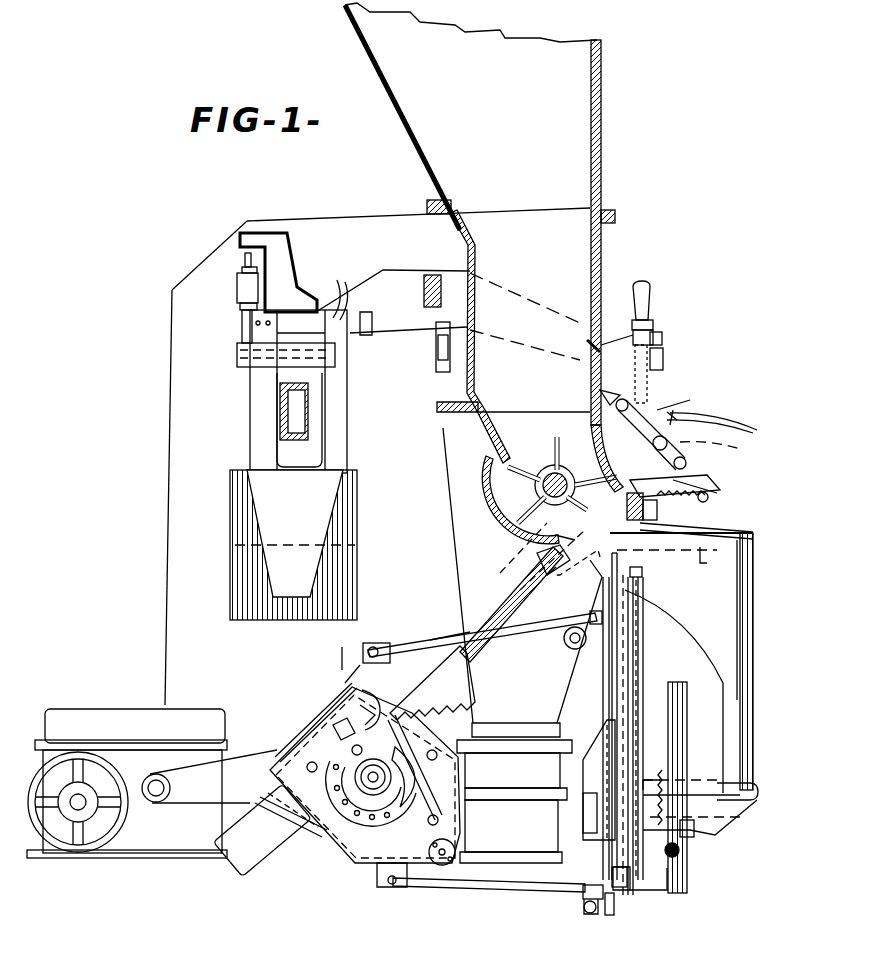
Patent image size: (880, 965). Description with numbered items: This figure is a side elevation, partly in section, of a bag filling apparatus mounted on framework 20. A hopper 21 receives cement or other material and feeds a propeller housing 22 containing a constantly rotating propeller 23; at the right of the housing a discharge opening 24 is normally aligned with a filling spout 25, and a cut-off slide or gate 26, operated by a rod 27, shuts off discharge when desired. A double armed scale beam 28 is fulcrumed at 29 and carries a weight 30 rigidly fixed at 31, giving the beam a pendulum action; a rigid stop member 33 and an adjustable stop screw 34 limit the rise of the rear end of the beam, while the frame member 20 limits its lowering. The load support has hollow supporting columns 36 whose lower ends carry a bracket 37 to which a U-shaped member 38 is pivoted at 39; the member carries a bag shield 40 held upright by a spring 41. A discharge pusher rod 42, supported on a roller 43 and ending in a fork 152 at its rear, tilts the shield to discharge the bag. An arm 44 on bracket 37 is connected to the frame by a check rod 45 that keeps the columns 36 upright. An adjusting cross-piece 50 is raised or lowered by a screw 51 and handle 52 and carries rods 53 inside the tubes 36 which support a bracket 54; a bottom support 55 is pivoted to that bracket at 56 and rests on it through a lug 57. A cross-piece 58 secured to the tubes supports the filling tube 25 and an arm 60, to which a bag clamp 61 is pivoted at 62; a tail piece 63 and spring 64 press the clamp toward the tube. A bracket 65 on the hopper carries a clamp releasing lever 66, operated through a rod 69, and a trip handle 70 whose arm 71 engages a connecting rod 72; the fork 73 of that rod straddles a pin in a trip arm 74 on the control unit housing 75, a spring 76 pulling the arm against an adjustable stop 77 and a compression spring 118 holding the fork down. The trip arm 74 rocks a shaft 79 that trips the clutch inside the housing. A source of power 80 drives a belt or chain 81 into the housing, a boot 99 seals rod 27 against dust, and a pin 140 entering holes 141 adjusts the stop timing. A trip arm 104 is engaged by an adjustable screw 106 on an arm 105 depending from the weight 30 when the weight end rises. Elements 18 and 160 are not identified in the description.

The pivot 18 is at (380, 645).
The framework 20 is at (278, 417).
The hopper 21 is at (600, 97).
The propeller housing 22 is at (492, 500).
The propeller 23 is at (530, 440).
The discharge opening 24 is at (600, 557).
The filling spout 25 is at (666, 567).
The cut-off slide or gate 26 is at (564, 533).
The rod 27 is at (517, 607).
The double armed scale beam 28 is at (387, 325).
The fulcrum 29 is at (440, 330).
The weight 30 is at (352, 520).
The fixing point of weight 31 is at (341, 301).
The rigid stop member 33 is at (278, 238).
The adjustable stop screw 34 is at (247, 260).
The hollow supporting columns 36 is at (643, 660).
The bracket 37 is at (643, 887).
The U-shaped member 38 is at (682, 728).
The pivot 39 is at (676, 853).
The bag shield 40 is at (677, 633).
The spring 41 is at (667, 767).
The discharge pusher rod 42 is at (510, 637).
The roller 43 is at (568, 652).
The arm 44 is at (603, 917).
The check rod 45 is at (467, 888).
The adjusting cross-piece 50 is at (660, 368).
The screw 51 is at (647, 393).
The handle 52 is at (650, 290).
The rods 53 is at (642, 571).
The bracket 54 is at (622, 840).
The bottom support 55 is at (740, 797).
The pivot 56 is at (700, 830).
The lug 57 is at (592, 792).
The cross-piece 58 is at (675, 476).
The arm 60 is at (690, 463).
The bag clamp 61 is at (690, 520).
The pivot 62 is at (708, 508).
The tail piece 63 is at (712, 472).
The spring 64 is at (712, 490).
The bracket 65 is at (587, 347).
The clamp releasing lever 66 is at (607, 456).
The rod 69 is at (517, 550).
The trip handle 70 is at (727, 413).
The arm 71 is at (683, 407).
The connecting rod 72 is at (503, 573).
The fork 73 is at (338, 744).
The trip arm 74 is at (360, 738).
The control unit housing 75 is at (322, 835).
The spring 76 is at (385, 776).
The adjustable stop 77 is at (360, 710).
The shaft 79 is at (370, 788).
The source of power 80 is at (155, 793).
The belt or chain 81 is at (213, 800).
The boot 99 is at (430, 697).
The trip arm 104 is at (337, 705).
The downwardly extending arm 105 is at (342, 647).
The adjustable screw 106 is at (345, 690).
The compression spring 118 is at (590, 398).
The pin 140 is at (407, 820).
The holes 141 is at (387, 817).
The fork 152 is at (441, 625).
The block 160 is at (614, 508).